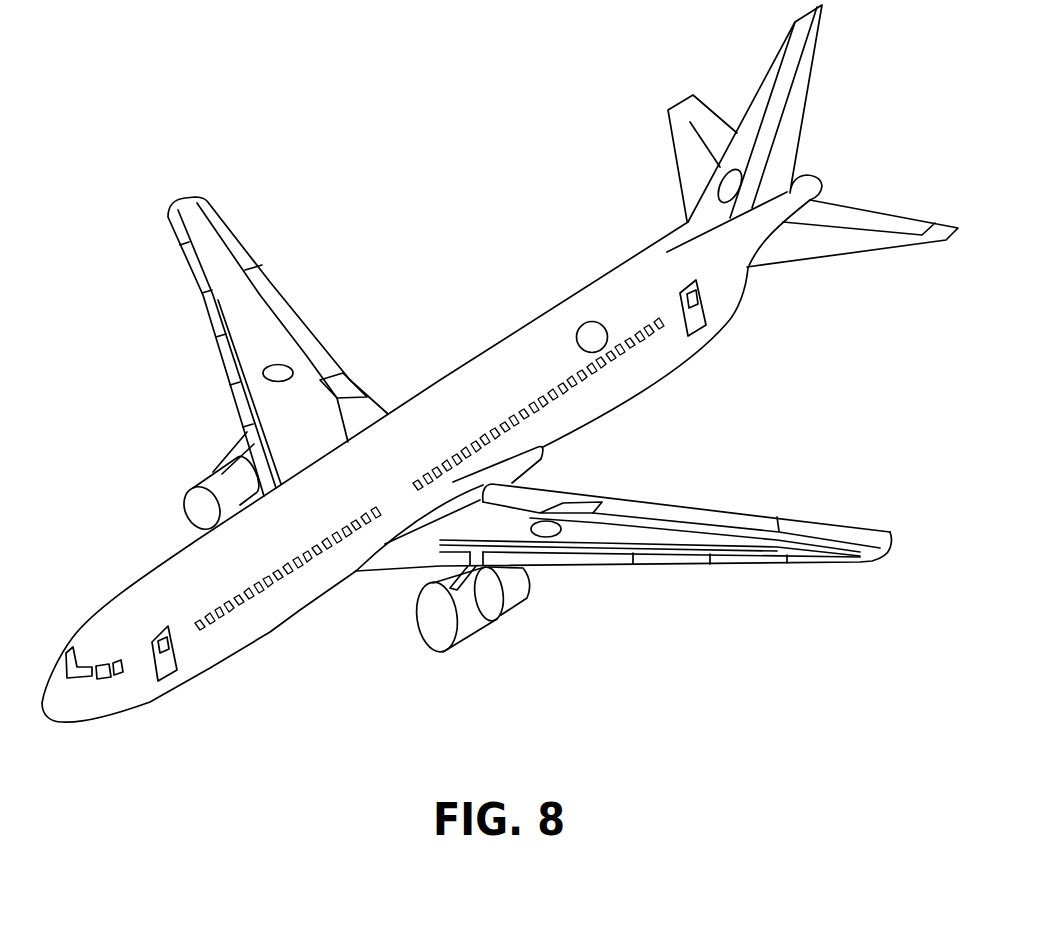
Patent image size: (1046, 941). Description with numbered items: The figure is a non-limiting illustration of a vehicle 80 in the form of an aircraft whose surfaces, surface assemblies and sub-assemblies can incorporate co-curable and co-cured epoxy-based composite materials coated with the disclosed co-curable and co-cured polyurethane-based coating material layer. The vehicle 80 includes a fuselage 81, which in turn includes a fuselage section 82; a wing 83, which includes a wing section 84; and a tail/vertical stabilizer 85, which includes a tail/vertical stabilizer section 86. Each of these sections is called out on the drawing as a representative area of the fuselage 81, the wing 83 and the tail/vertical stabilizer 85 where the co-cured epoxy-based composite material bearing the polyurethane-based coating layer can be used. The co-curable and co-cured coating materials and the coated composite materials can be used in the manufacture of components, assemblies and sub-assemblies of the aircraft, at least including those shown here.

The vehicle 80 is at (519, 150).
The fuselage 81 is at (515, 349).
The fuselage section 82 is at (590, 321).
The wing 83 is at (248, 325).
The wing section 84 is at (278, 365).
The tail/vertical stabilizer 85 is at (780, 86).
The tail/vertical stabilizer section 86 is at (752, 158).